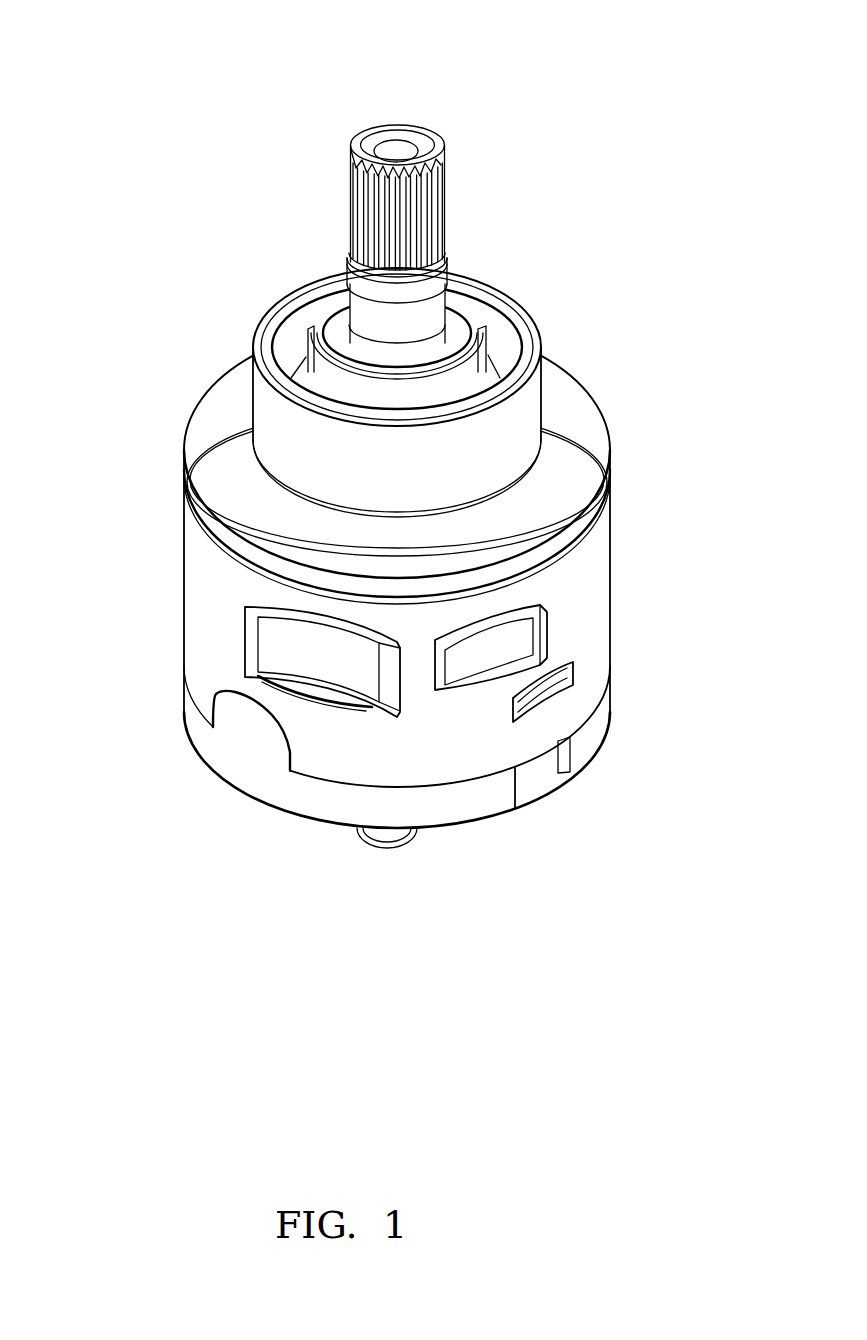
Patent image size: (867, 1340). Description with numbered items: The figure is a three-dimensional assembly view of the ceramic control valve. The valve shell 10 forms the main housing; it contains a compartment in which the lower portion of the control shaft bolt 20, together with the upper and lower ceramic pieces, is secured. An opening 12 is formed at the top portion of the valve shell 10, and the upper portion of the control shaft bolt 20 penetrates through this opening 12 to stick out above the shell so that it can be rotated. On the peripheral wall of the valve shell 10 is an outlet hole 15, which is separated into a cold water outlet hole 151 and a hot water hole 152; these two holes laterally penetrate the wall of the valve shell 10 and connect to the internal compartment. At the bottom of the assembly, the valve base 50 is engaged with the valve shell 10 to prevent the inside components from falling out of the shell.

The valve shell 10 is at (180, 580).
The opening 12 is at (345, 318).
The outlet hole 15 is at (253, 659).
The cold water outlet hole 151 is at (307, 637).
The hot water hole 152 is at (527, 632).
The control shaft bolt 20 is at (436, 126).
The valve base 50 is at (560, 793).